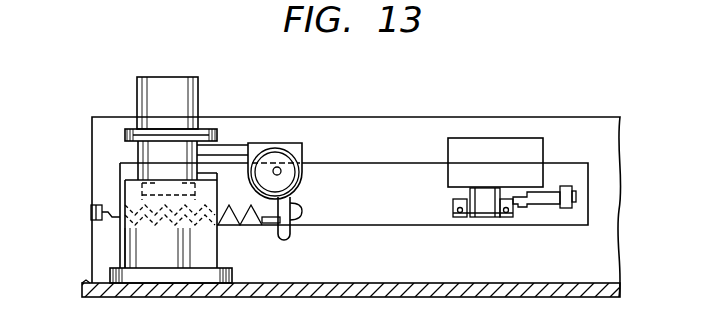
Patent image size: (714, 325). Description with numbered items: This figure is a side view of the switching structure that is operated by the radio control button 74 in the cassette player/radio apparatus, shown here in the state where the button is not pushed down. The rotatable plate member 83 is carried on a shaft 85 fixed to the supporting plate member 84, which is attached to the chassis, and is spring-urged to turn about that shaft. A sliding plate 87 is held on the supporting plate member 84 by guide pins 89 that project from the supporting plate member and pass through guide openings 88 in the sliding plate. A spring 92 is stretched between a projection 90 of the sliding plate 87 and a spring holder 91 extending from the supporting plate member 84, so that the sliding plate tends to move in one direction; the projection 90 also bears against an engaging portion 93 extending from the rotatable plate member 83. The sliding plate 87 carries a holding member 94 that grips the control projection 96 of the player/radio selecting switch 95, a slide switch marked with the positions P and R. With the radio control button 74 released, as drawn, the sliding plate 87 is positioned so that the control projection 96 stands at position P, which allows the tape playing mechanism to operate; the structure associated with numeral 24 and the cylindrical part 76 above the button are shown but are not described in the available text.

The housing 24 is at (128, 251).
The radio control button 74 is at (198, 109).
The cylinder 76 is at (193, 78).
The rotatable plate member 83 is at (236, 143).
The supporting plate member 84 is at (411, 117).
The shaft 85 is at (281, 170).
The sliding plate 87 is at (385, 226).
The guide openings 88 is at (545, 206).
The guide pins 89 is at (570, 209).
The projection 90 is at (303, 216).
The spring holder 91 is at (91, 211).
The spring 92 is at (254, 224).
The engaging portion 93 is at (287, 238).
The holding member 94 is at (455, 195).
The player/radio selecting switch 95 is at (496, 138).
The control projection 96 is at (486, 218).